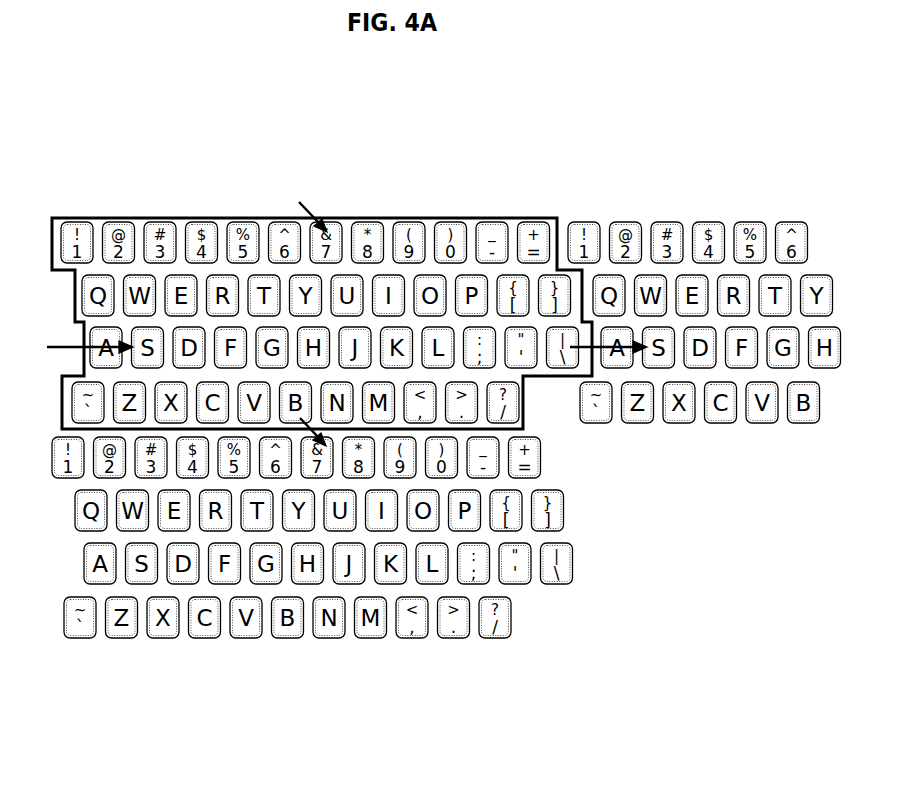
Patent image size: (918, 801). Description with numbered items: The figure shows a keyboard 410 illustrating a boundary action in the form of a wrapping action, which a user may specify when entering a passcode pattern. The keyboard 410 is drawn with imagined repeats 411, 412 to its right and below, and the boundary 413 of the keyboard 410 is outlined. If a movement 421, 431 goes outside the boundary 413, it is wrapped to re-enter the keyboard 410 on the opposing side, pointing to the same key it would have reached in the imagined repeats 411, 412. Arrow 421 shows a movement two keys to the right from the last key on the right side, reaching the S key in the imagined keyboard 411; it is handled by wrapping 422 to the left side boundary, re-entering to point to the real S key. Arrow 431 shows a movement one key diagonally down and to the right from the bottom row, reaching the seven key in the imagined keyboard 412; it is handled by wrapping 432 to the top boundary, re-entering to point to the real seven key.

The keyboard 410 is at (190, 188).
The imagined keyboard repeat 411 is at (705, 213).
The imagined keyboard repeat 412 is at (274, 660).
The boundary 413 is at (470, 218).
The movement arrow 421 is at (598, 345).
The wrapping 422 is at (73, 345).
The movement arrow 431 is at (305, 430).
The wrapping 432 is at (322, 221).